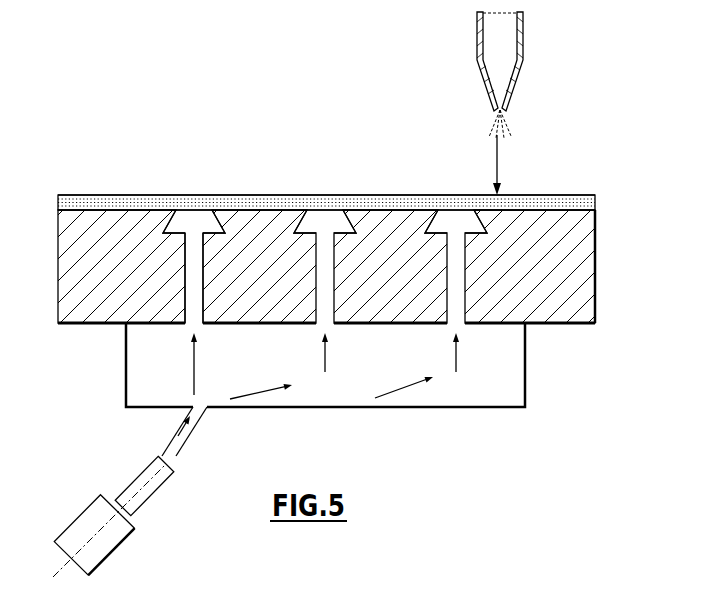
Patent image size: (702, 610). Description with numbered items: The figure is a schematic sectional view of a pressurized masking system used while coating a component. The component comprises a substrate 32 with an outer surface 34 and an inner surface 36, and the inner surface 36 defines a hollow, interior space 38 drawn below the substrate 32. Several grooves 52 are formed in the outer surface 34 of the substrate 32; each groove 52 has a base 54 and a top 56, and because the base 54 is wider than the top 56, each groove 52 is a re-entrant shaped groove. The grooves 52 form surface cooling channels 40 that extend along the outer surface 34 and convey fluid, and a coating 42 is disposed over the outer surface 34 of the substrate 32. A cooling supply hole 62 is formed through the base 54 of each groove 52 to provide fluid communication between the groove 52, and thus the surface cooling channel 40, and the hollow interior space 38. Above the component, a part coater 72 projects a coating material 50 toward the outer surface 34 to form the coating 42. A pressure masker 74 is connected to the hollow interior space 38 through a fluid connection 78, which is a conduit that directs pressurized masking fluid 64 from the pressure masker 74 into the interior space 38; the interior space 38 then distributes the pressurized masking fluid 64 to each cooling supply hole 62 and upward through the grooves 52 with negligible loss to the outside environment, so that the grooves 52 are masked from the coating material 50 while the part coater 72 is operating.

The substrate 32 is at (582, 278).
The outer surface 34 is at (82, 213).
The inner surface 36 is at (90, 325).
The hollow interior space 38 is at (502, 364).
The surface cooling channel 40 is at (505, 208).
The coating 42 is at (90, 205).
The coating material 50 is at (488, 138).
The groove 52 is at (192, 212).
The base 54 is at (472, 222).
The top 56 is at (324, 206).
The cooling supply hole 62 is at (227, 320).
The pressurized masking fluid 64 is at (190, 431).
The part coater 72 is at (523, 48).
The pressure masker 74 is at (135, 547).
The fluid connection 78 is at (182, 430).